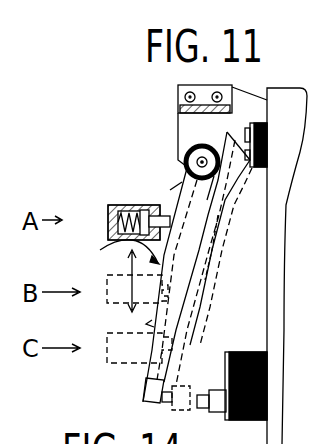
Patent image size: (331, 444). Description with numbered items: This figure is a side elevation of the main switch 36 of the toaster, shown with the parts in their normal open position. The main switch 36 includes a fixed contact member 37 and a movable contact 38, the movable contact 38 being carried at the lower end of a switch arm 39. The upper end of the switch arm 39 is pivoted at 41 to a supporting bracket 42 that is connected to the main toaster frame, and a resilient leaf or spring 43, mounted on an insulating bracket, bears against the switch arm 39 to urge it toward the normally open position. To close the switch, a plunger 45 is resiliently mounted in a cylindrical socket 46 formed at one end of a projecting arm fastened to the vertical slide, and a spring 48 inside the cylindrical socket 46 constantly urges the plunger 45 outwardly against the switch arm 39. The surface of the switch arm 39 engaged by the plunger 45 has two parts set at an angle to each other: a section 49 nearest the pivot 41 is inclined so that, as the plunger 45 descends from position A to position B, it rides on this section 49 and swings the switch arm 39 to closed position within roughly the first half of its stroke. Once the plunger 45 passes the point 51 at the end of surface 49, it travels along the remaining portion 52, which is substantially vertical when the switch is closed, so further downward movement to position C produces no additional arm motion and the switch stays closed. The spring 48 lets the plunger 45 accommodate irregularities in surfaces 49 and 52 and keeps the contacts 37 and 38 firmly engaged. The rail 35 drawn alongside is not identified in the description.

The support rail 35 is at (230, 111).
The main switch 36 is at (138, 382).
The fixed contact member 37 is at (203, 408).
The movable contact 38 is at (165, 402).
The switch arm 39 is at (183, 170).
The pivot 41 is at (187, 152).
The supporting bracket 42 is at (193, 127).
The resilient leaf or spring 43 is at (232, 190).
The plunger 45 is at (168, 214).
The cylindrical socket 46 is at (125, 205).
The spring 48 is at (108, 217).
The section of switch arm 49 is at (175, 187).
The point 51 is at (120, 252).
The remaining portion of switch arm 52 is at (150, 319).